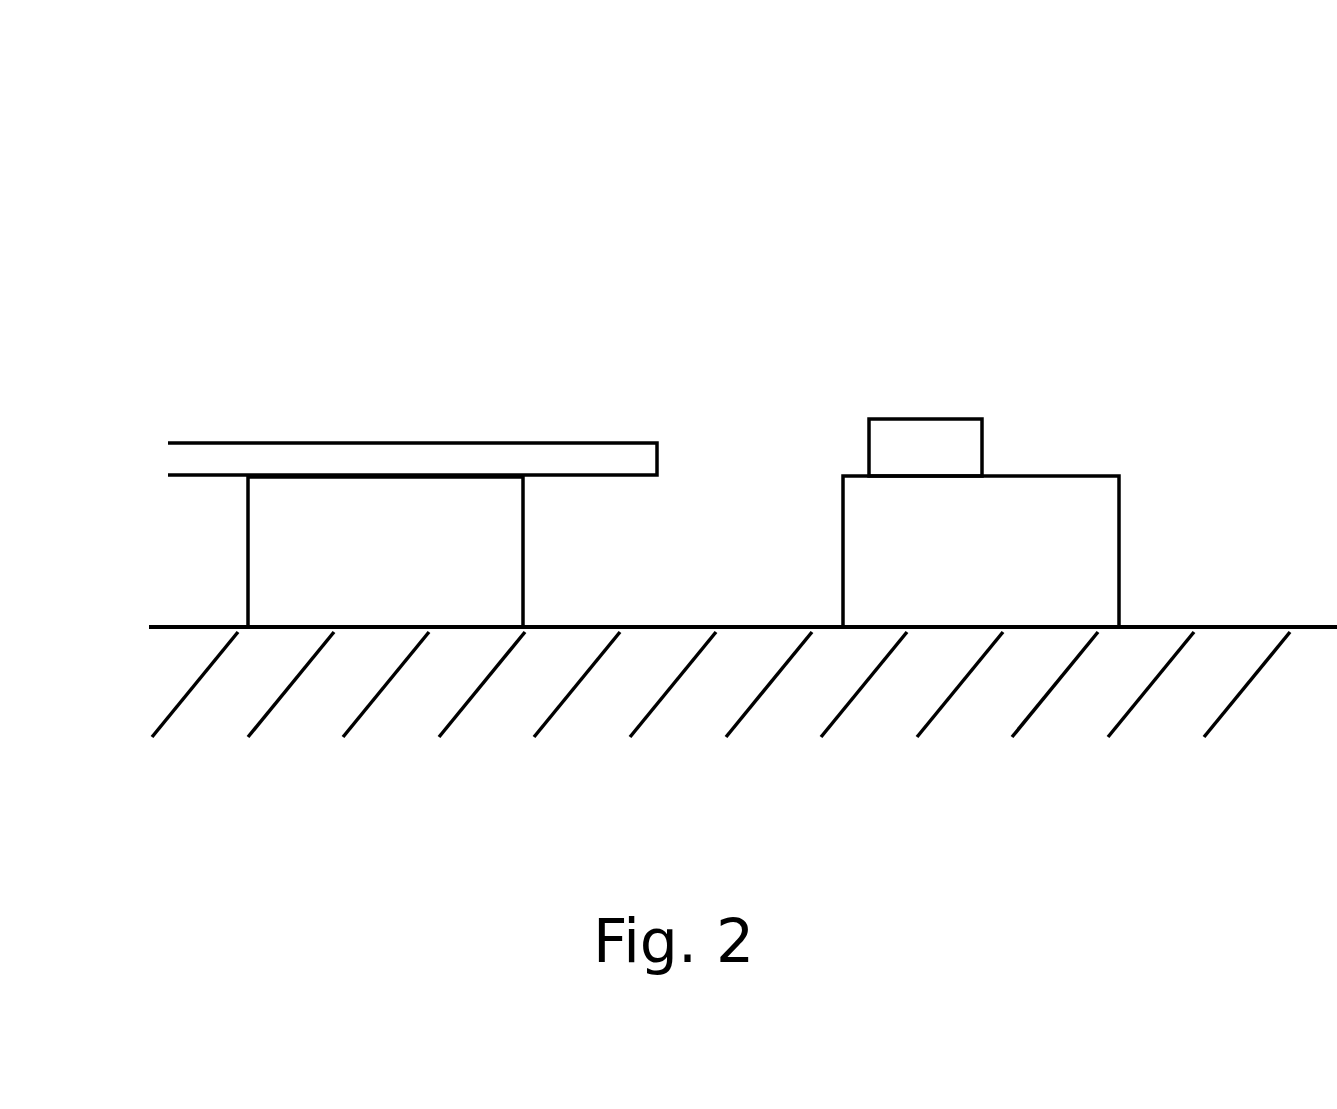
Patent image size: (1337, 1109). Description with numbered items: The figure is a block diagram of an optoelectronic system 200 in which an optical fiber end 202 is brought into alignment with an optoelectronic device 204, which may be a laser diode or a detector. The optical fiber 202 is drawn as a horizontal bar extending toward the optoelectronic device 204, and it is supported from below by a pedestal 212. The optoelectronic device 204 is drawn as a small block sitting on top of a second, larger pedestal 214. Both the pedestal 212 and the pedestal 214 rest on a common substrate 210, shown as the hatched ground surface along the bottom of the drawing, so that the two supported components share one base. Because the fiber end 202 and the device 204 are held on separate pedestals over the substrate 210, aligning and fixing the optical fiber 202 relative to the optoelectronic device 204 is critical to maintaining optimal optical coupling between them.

The optoelectronic system 200 is at (813, 174).
The optical fiber end 202 is at (642, 413).
The optoelectronic device 204 is at (940, 385).
The substrate 210 is at (180, 600).
The pedestal 212 is at (556, 520).
The pedestal 214 is at (1106, 446).